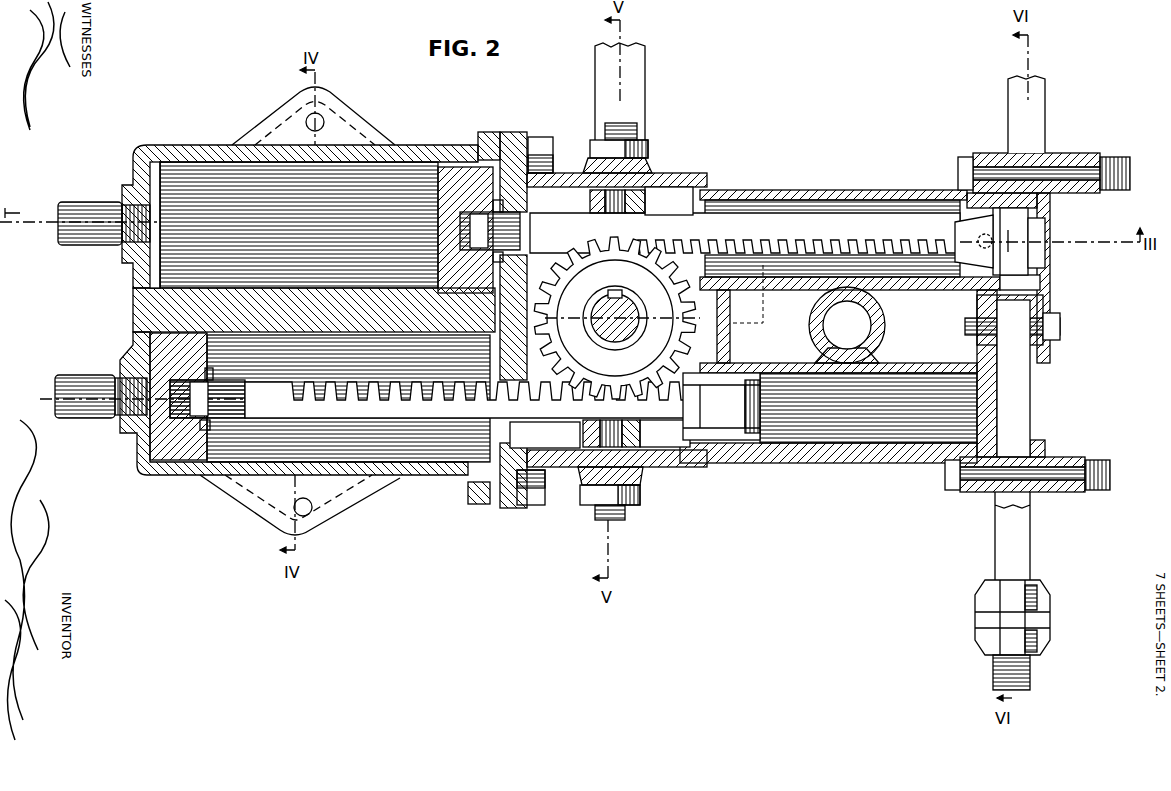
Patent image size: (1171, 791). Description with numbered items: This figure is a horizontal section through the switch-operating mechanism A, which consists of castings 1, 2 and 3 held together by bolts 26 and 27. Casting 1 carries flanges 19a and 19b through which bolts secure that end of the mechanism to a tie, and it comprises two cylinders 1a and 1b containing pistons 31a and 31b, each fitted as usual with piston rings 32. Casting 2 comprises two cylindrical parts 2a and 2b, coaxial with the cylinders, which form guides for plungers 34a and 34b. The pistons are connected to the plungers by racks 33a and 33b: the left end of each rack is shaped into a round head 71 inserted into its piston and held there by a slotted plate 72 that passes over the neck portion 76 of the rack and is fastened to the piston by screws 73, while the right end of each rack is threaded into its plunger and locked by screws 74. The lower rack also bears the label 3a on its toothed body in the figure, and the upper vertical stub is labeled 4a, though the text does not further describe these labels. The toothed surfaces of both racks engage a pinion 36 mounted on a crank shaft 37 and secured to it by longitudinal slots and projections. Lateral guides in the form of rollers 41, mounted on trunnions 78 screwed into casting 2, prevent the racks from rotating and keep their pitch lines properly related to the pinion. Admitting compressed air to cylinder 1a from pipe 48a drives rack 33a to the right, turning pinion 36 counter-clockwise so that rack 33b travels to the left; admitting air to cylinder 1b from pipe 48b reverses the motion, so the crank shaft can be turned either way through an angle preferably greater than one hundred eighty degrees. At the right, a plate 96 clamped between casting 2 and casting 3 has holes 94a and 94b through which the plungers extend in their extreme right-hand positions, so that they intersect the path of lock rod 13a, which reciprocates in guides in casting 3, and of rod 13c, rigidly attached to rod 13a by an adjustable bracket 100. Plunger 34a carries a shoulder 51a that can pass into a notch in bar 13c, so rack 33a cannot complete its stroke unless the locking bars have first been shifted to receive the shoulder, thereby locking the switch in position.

The casting 1 is at (140, 297).
The cylinder 1a is at (233, 440).
The cylinder 1b is at (193, 198).
The casting 2 is at (721, 320).
The cylindrical part 2a is at (832, 447).
The cylindrical part 2b is at (842, 197).
The casting 3 is at (1050, 303).
The lower rack 3a is at (468, 400).
The upper shaft 4a is at (646, 90).
The lock rod 13a is at (1040, 139).
The rod 13c is at (1020, 549).
The flange 19a is at (378, 492).
The flange 19b is at (385, 130).
The bolt 26 is at (540, 137).
The bolt 27 is at (1085, 167).
The piston 31a is at (152, 350).
The piston 31b is at (445, 253).
The piston ring 32 is at (470, 153).
The rack 33a is at (545, 435).
The rack 33b is at (568, 230).
The plunger 34a is at (705, 446).
The plunger 34b is at (978, 207).
The pinion 36 is at (662, 335).
The crank shaft 37 is at (628, 300).
The roller 41 is at (638, 317).
The pipe 48a is at (80, 418).
The pipe 48b is at (78, 203).
The shoulder 51a is at (752, 416).
The round head 71 is at (452, 224).
The plate 72 is at (510, 218).
The screw 73 is at (510, 265).
The screw 74 is at (978, 242).
The neck portion 76 is at (223, 399).
The trunnion 78 is at (650, 170).
The hole 94a is at (1000, 398).
The hole 94b is at (1043, 281).
The plate 96 is at (987, 313).
The adjustable bracket 100 is at (1045, 620).
The mechanism A is at (438, 525).